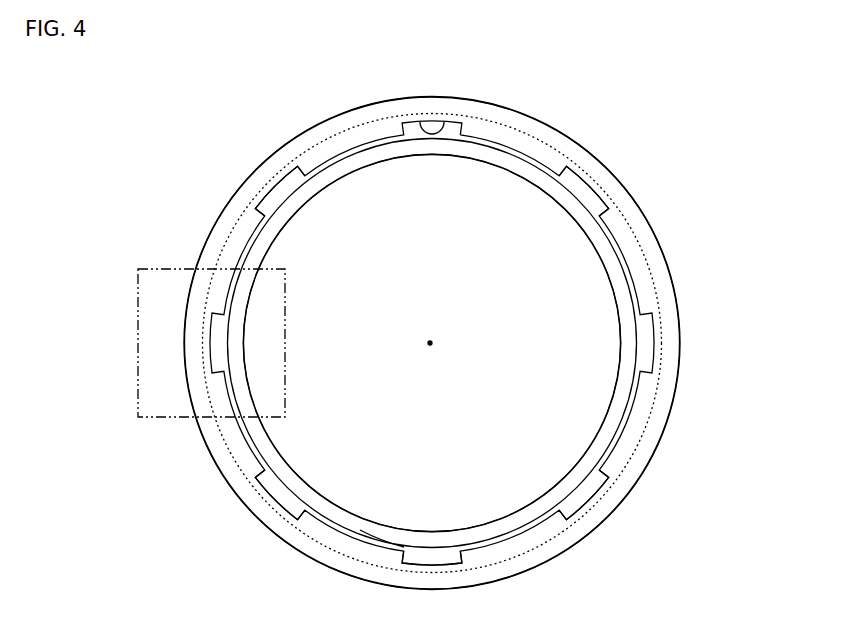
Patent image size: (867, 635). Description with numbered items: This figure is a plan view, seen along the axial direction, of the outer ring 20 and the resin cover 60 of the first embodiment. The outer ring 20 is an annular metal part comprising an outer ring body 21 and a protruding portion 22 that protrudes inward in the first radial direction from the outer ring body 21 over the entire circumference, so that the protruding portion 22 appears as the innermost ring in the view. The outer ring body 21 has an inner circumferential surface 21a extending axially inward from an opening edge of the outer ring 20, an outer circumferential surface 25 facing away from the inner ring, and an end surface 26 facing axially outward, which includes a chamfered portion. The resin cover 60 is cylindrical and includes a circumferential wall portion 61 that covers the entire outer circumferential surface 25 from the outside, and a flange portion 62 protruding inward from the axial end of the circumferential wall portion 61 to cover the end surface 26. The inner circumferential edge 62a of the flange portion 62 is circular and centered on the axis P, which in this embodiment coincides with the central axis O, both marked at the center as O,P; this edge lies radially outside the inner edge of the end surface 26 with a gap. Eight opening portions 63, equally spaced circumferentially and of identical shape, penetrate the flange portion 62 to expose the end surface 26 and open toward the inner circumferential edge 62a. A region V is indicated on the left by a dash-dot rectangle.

The resin cover 60 is at (336, 107).
The circumferential wall portion 61 is at (214, 224).
The flange portion 62 is at (505, 139).
The inner circumferential edge 62a is at (519, 162).
The opening portion 63 is at (433, 122).
The outer circumferential surface 25 is at (650, 418).
The end surface 26 is at (585, 497).
The outer ring body 21 is at (432, 561).
The inner circumferential surface 21a is at (379, 542).
The outer ring 20 is at (514, 499).
The protruding portion 22 is at (575, 480).
The central axis O and axis P O,P is at (430, 343).
The region V is at (138, 343).